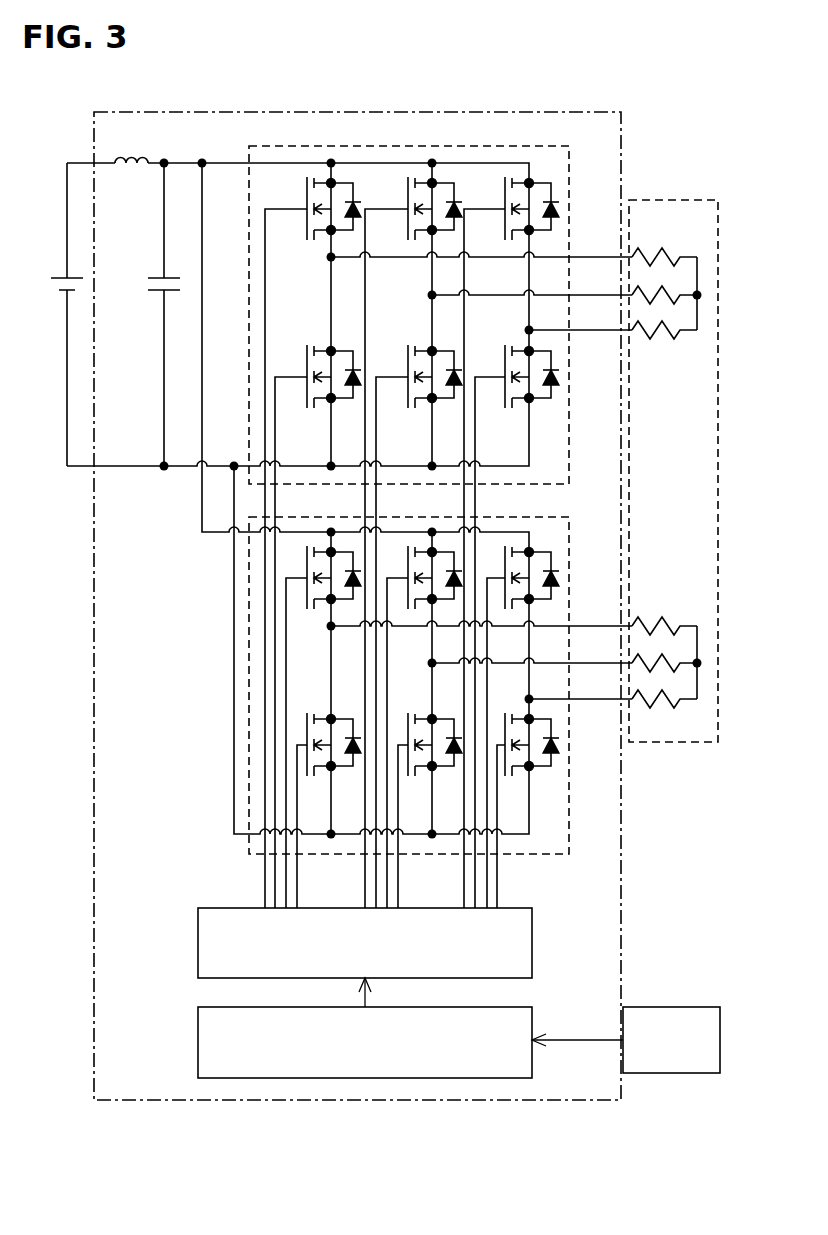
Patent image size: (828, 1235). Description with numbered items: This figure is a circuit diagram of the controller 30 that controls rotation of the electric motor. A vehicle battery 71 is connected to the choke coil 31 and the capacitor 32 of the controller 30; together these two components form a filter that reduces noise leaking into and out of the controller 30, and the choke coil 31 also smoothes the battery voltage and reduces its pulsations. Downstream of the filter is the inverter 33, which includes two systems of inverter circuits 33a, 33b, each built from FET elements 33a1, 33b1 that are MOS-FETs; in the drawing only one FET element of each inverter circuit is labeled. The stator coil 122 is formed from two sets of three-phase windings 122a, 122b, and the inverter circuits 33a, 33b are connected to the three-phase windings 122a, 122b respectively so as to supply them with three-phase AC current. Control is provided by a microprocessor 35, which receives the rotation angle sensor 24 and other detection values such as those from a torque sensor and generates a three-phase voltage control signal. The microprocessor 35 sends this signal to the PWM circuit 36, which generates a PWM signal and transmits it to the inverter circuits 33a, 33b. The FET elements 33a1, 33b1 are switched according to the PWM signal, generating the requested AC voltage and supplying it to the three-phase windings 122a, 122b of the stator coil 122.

The rotation angle sensor 24 is at (700, 1007).
The controller 30 is at (172, 112).
The choke coil 31 is at (128, 130).
The capacitor 32 is at (143, 307).
The inverter 33 is at (366, 497).
The inverter circuit 33a is at (396, 497).
The FET element 33a1 is at (552, 162).
The inverter circuit 33b is at (394, 712).
The FET element 33b1 is at (537, 795).
The microprocessor 35 is at (198, 1045).
The PWM circuit 36 is at (198, 943).
The vehicle battery 71 is at (62, 250).
The stator coil 122 is at (673, 427).
The three-phase winding 122a is at (664, 360).
The three-phase winding 122b is at (662, 605).